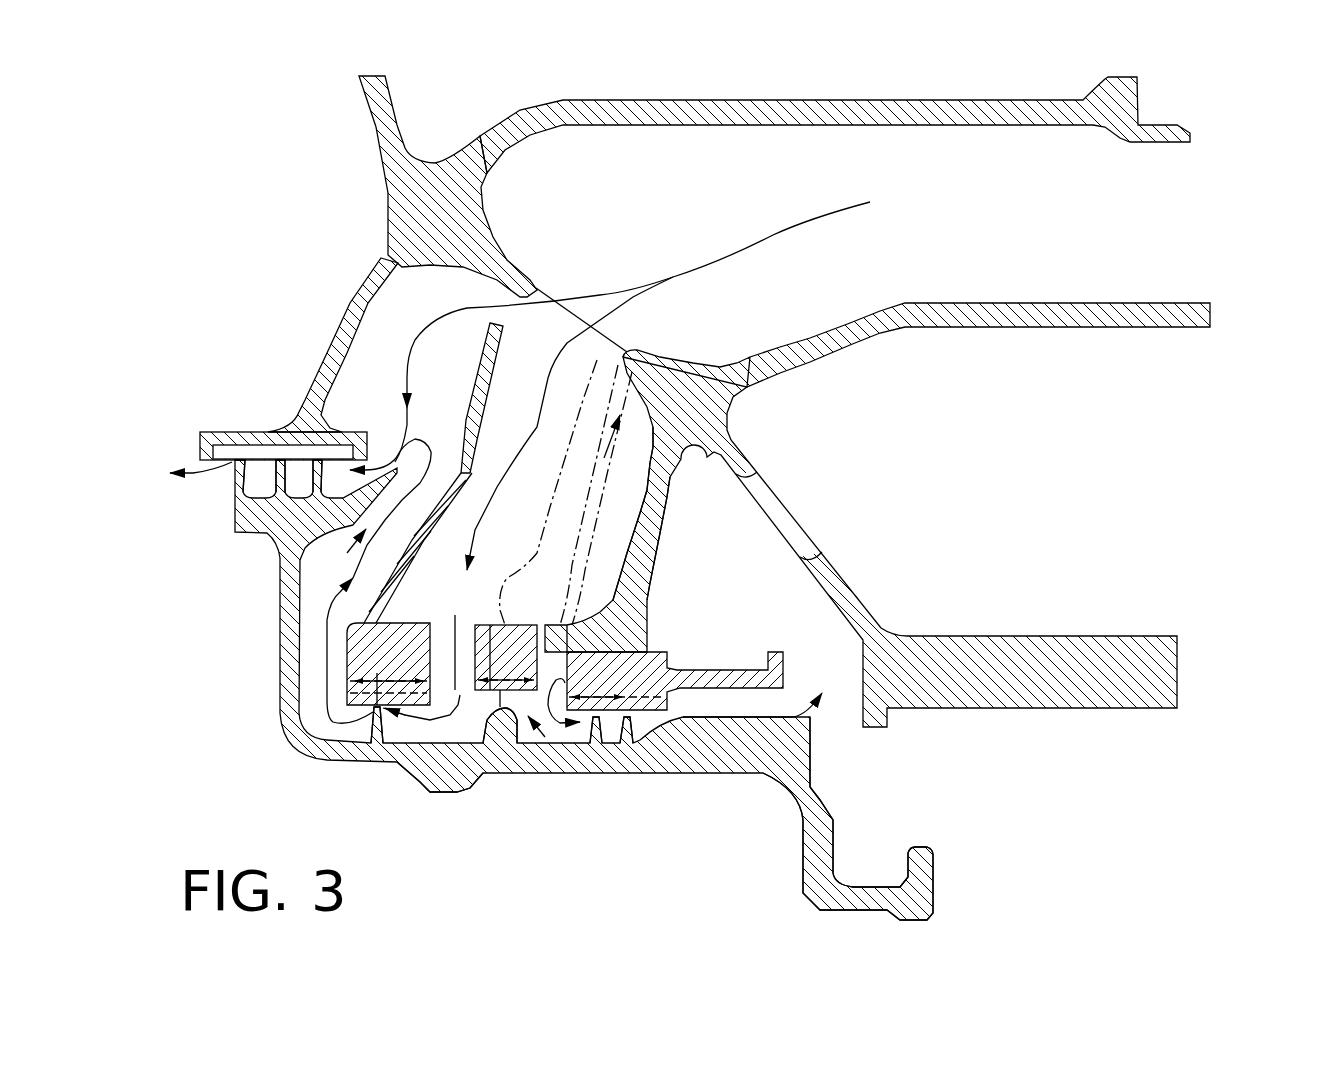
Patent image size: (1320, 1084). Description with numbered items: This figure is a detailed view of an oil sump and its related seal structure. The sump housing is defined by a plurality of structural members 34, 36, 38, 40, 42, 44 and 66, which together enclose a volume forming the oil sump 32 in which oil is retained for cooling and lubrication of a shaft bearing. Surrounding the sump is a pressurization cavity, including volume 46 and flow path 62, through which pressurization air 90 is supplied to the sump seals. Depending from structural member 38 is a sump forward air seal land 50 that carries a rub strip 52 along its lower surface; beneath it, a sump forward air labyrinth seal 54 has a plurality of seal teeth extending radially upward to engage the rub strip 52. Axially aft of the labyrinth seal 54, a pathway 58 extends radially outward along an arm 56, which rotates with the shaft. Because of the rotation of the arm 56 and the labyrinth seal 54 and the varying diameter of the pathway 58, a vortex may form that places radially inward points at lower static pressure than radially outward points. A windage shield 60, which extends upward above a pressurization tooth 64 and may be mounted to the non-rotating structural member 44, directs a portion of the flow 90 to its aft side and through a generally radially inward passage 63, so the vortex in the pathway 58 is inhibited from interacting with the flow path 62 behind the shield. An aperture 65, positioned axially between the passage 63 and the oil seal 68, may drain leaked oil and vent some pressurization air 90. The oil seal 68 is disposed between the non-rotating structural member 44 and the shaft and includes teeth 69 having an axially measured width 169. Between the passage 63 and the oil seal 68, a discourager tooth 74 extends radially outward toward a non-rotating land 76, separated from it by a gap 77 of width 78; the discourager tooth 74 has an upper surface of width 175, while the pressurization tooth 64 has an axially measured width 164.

The oil sump 32 is at (1152, 428).
The structural member 34 is at (392, 104).
The structural member 36 is at (613, 100).
The structural member 38 is at (350, 300).
The structural member 40 is at (927, 302).
The structural member 42 is at (730, 440).
The structural member 44 is at (652, 512).
The sump pressurization cavity volume 46 is at (1146, 238).
The sump forward air seal land 50 is at (245, 432).
The rub strip 52 is at (213, 451).
The sump forward air labyrinth seal 54 is at (240, 468).
The arm 56 is at (281, 655).
The pathway 58 is at (360, 540).
The windage shield 60 is at (502, 378).
The flow path 62 is at (489, 541).
The passage 63 is at (445, 635).
The pressurization tooth 64 is at (377, 705).
The aperture 65 is at (570, 600).
The structural member 66 is at (627, 325).
The oil seal 68 is at (624, 746).
The oil seal tooth 69 is at (597, 745).
The discourager tooth 74 is at (472, 780).
The non-rotating land 76 is at (500, 622).
The gap 77 is at (520, 745).
The gap width 78 is at (466, 710).
The pressurization air 90 is at (597, 290).
The pressurization tooth width 164 is at (413, 673).
The oil seal tooth width 169 is at (608, 698).
The discourager tooth upper surface width 175 is at (485, 680).